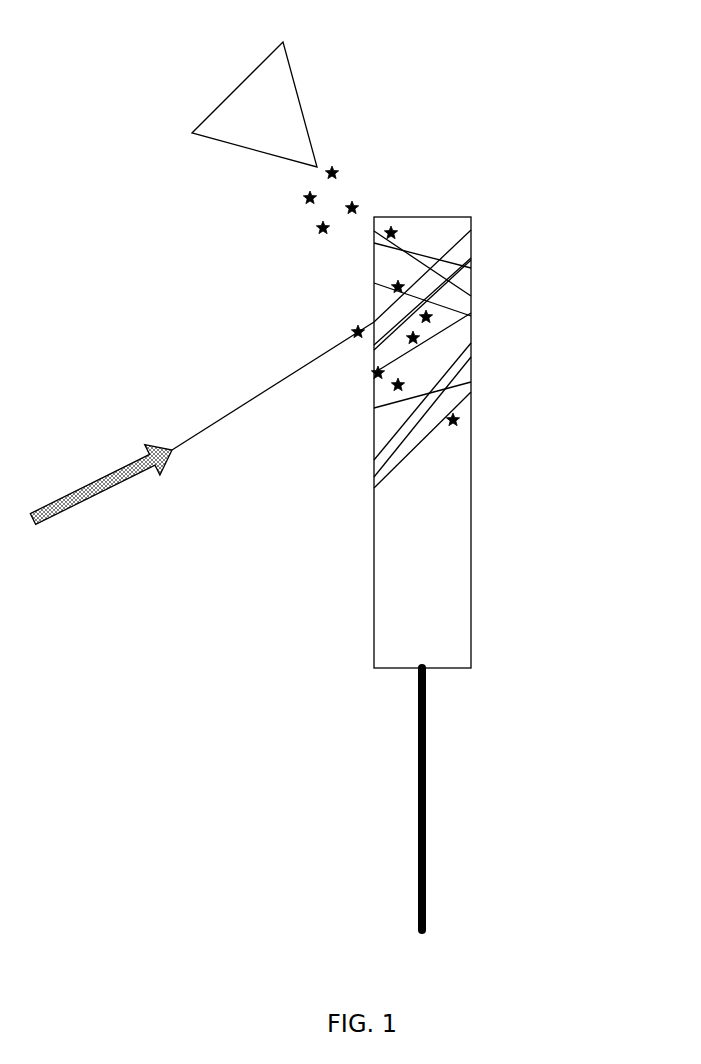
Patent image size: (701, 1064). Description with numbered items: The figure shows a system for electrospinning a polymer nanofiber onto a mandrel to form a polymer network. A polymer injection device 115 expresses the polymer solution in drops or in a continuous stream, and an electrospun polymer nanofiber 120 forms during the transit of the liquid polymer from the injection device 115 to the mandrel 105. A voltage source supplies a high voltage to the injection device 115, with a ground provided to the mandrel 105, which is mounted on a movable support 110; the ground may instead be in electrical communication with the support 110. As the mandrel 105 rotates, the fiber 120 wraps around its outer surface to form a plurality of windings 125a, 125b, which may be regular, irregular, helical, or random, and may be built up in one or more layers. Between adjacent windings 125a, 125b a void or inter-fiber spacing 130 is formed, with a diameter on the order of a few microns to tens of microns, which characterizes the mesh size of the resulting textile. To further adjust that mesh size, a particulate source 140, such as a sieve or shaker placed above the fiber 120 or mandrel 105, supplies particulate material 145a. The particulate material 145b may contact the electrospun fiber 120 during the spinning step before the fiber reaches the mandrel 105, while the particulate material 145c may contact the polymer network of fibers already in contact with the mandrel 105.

The mandrel 105 is at (497, 547).
The movable support 110 is at (440, 807).
The polymer injection device 115 is at (113, 500).
The electrospun polymer nanofiber 120 is at (265, 403).
The winding 125a is at (483, 230).
The winding 125b is at (483, 258).
The inter-fiber spacing 130 is at (482, 315).
The particulate source 140 is at (298, 80).
The particulate material 145a is at (343, 174).
The particulate material 145b is at (343, 323).
The particulate material 145c is at (467, 418).